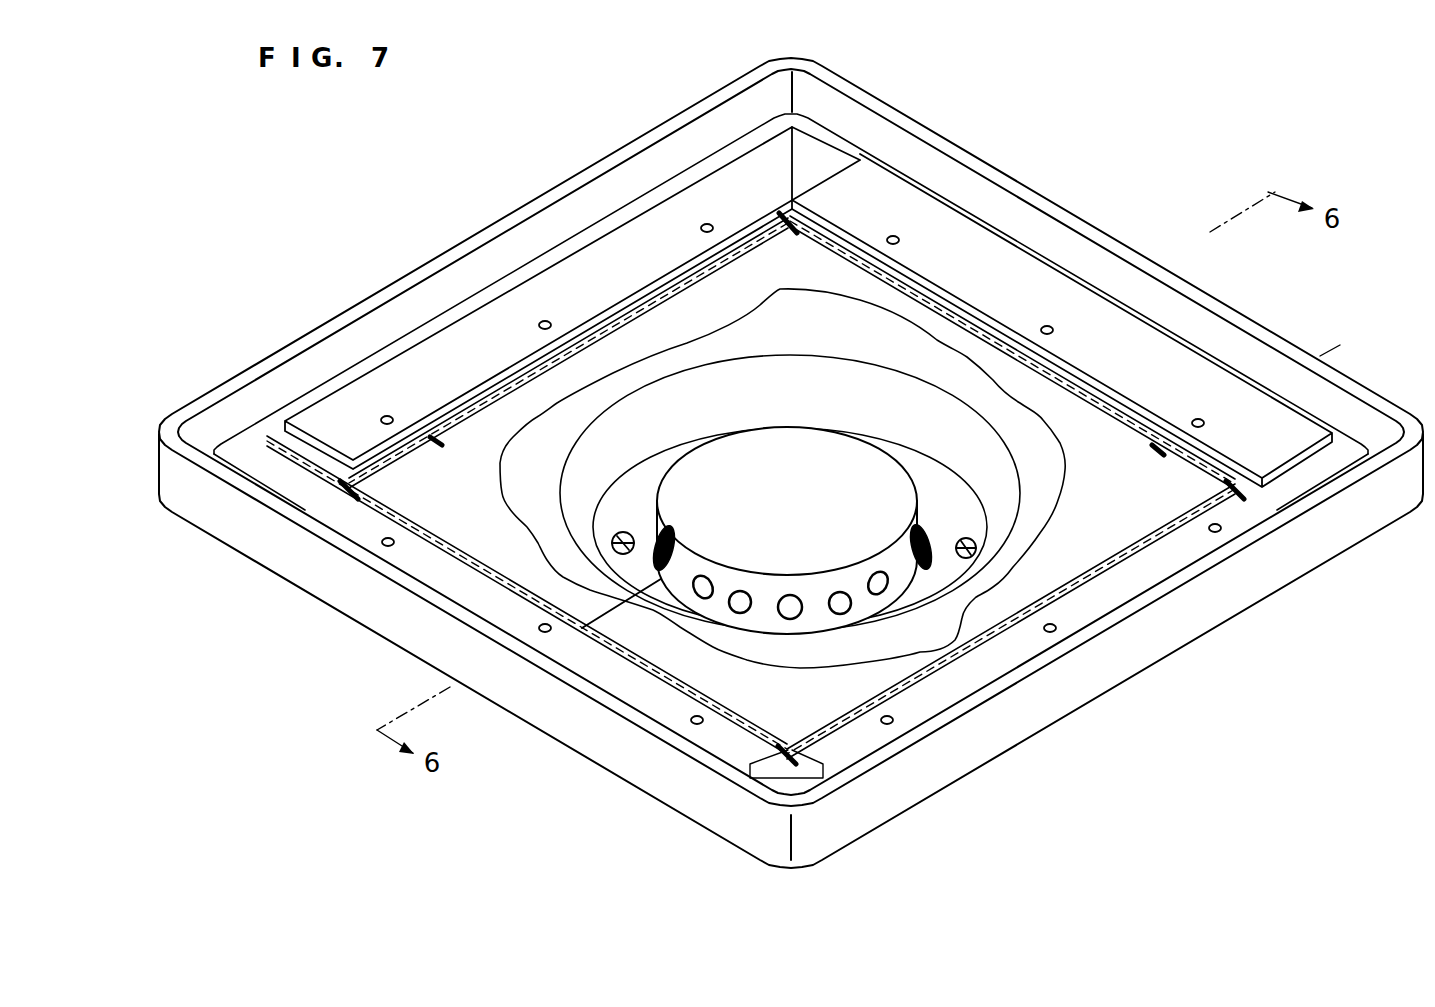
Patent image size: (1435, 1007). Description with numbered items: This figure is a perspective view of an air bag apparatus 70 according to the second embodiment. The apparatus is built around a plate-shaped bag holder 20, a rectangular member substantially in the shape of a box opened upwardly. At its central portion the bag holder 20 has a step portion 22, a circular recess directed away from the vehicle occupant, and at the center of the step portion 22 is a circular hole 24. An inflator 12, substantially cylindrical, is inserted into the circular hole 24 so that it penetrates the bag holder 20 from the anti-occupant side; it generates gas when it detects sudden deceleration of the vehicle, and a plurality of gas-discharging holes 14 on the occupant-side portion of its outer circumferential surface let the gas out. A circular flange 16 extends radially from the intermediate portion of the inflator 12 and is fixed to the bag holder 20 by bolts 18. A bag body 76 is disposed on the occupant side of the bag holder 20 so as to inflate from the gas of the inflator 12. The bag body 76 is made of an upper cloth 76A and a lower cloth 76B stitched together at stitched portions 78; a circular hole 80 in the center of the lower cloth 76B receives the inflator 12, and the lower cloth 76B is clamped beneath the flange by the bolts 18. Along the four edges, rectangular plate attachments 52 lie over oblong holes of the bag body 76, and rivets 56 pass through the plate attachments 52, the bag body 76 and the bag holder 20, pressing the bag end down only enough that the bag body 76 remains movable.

The air bag apparatus 70 is at (1136, 212).
The plate-shaped bag holder 20 is at (1330, 347).
The plate attachments 52 is at (640, 232).
The rivets 56 is at (545, 322).
The bag body 76 is at (1180, 562).
The upper cloth 76A is at (1097, 553).
The lower cloth 76B is at (917, 467).
The stitched portions 78 is at (437, 438).
The circular hole 24 is at (586, 628).
The circular flange 16 is at (960, 583).
The step portion 22 is at (667, 547).
The inflator 12 is at (814, 450).
The gas-discharging holes 14 is at (703, 575).
The circular hole 80 is at (918, 538).
The bolts 18 is at (622, 532).